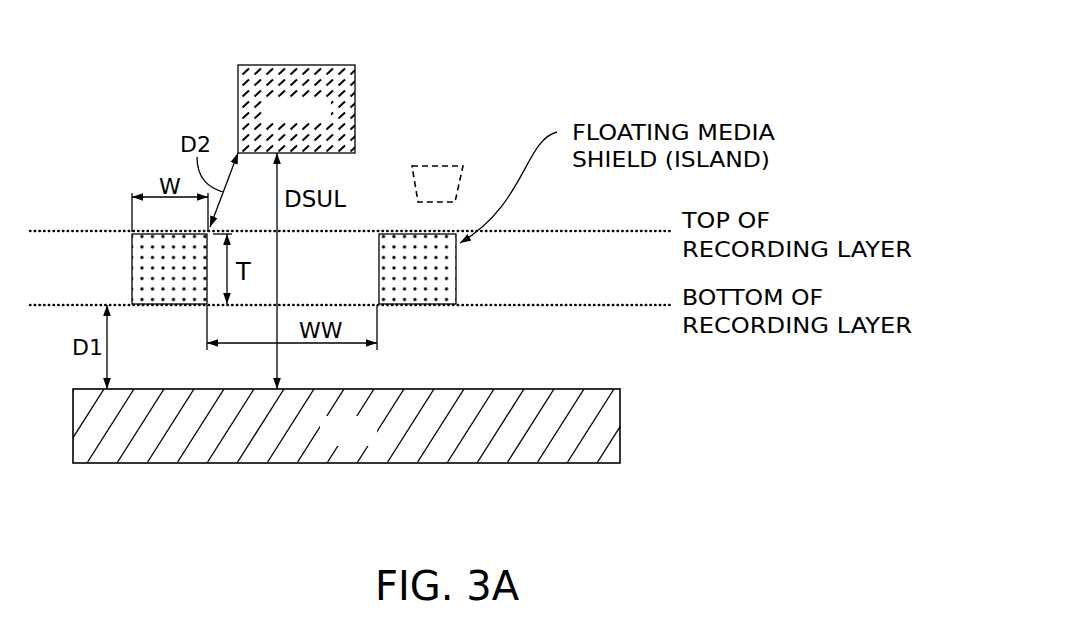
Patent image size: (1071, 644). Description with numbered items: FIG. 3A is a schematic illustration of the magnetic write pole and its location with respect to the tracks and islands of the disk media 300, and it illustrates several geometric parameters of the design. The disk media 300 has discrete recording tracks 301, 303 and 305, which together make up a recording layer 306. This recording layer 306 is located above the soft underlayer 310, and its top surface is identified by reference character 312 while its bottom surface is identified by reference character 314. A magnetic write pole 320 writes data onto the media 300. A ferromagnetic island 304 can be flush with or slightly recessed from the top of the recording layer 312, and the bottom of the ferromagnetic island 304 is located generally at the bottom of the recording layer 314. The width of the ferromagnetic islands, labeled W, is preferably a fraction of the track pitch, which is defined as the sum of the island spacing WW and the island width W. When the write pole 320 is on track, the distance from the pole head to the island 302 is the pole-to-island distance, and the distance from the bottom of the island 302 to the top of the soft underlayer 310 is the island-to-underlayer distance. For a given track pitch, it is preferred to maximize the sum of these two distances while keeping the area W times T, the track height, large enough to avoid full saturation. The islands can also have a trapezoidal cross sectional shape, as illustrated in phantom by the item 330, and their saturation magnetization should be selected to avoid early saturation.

The disk media 300 is at (658, 348).
The recording track 301 is at (105, 272).
The island 302 is at (170, 290).
The recording track 303 is at (340, 274).
The ferromagnetic island 304 is at (432, 290).
The recording track 305 is at (510, 274).
The recording layer 306 is at (658, 274).
The soft underlayer 310 is at (620, 425).
The top surface of the recording layer 312 is at (582, 230).
The bottom surface of the recording layer 314 is at (590, 307).
The magnetic write pole 320 is at (355, 100).
The trapezoidal island 330 is at (443, 165).